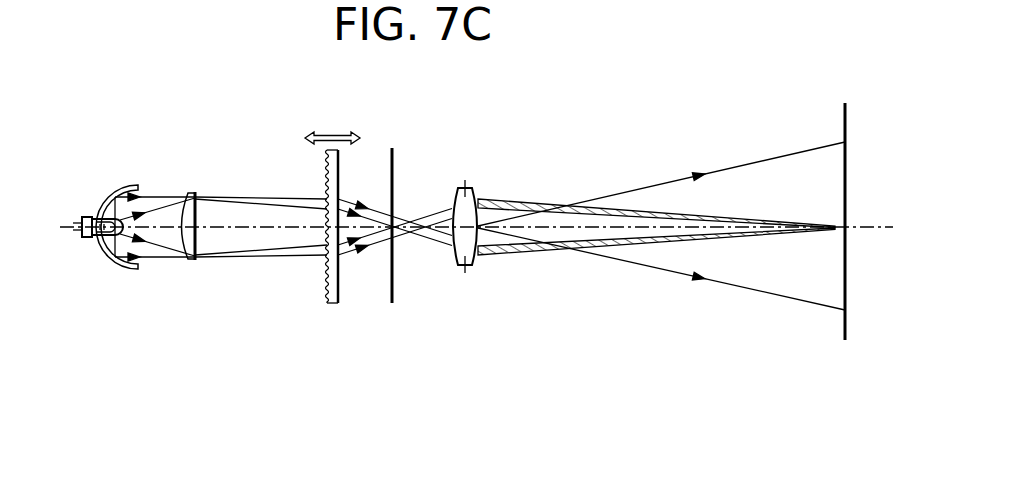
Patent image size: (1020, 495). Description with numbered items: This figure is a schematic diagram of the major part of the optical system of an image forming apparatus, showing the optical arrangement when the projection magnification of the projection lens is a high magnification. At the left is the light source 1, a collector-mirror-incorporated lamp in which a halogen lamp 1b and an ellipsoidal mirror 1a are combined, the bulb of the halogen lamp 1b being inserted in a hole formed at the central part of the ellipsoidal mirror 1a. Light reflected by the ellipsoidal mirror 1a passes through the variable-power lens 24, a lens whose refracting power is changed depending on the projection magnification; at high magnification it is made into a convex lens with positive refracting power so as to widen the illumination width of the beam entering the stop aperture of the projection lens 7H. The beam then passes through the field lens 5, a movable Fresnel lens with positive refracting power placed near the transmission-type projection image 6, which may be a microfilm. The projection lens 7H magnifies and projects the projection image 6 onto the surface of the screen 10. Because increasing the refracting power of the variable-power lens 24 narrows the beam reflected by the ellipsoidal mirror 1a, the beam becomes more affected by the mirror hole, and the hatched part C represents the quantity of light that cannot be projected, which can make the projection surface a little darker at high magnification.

The light source 1 is at (132, 148).
The ellipsoidal mirror 1a is at (118, 192).
The halogen lamp 1b is at (84, 215).
The variable-power lens 24 is at (190, 260).
The field lens 5 is at (327, 304).
The projection image 6 is at (394, 291).
The projection lens 7H is at (466, 195).
The hatched part C is at (736, 217).
The screen 10 is at (847, 150).